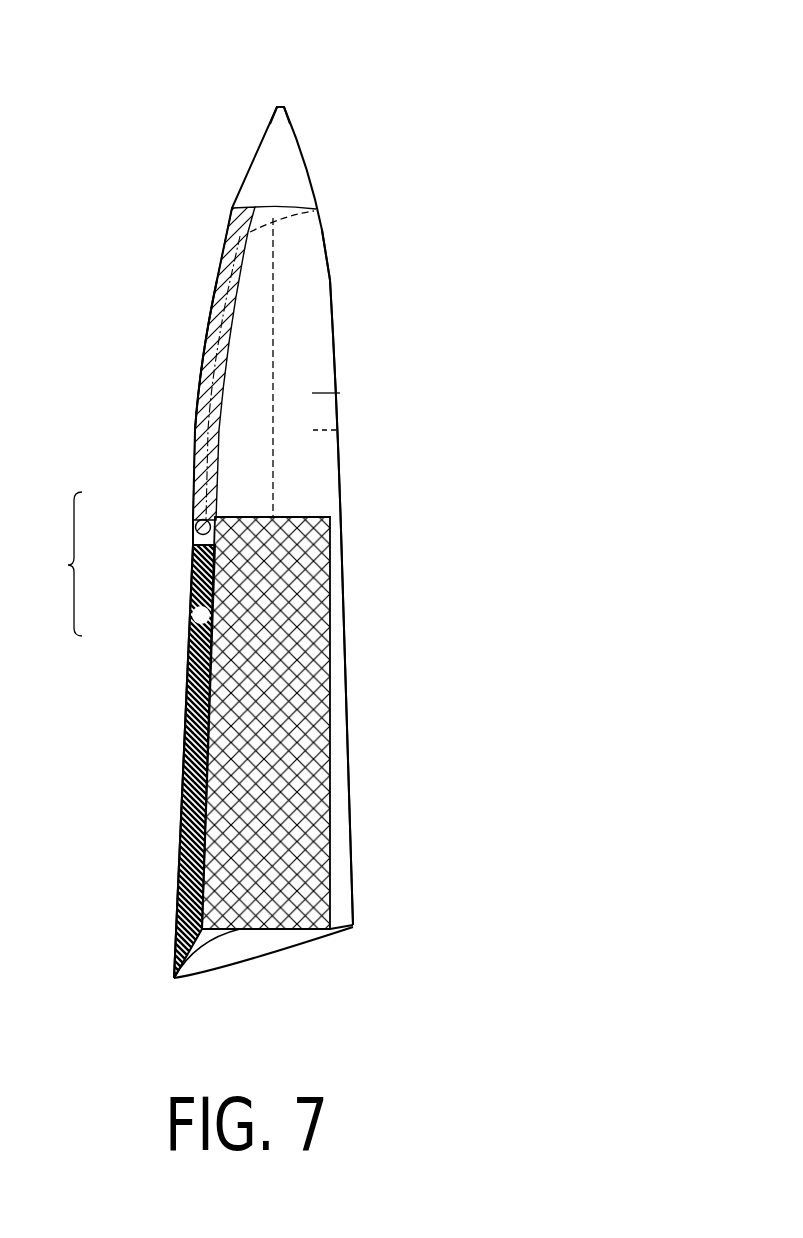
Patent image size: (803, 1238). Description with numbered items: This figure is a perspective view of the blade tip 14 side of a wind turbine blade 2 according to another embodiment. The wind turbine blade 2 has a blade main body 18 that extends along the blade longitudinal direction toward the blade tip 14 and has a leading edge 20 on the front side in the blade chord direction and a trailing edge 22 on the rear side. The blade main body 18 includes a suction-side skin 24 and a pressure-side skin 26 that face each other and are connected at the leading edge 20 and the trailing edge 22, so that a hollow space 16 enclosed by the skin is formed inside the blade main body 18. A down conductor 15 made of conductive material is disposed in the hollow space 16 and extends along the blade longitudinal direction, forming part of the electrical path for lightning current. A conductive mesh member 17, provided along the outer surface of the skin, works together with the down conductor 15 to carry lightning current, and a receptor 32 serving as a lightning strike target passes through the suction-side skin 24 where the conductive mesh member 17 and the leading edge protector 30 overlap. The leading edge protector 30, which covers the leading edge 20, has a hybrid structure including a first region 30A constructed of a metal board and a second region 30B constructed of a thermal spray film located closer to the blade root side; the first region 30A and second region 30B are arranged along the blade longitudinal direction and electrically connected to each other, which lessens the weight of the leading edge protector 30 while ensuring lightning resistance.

The wind turbine blade 2 is at (405, 88).
The blade tip 14 is at (291, 108).
The down conductor 15 is at (273, 276).
The hollow space 16 is at (268, 953).
The conductive mesh member 17 is at (332, 665).
The blade main body 18 is at (333, 340).
The leading edge 20 is at (196, 418).
The trailing edge 22 is at (346, 478).
The suction-side skin 24 is at (326, 393).
The pressure-side skin 26 is at (326, 430).
The leading edge protector 30 is at (57, 564).
The first region 30A is at (193, 499).
The second region 30B is at (192, 600).
The receptor 32 is at (213, 516).